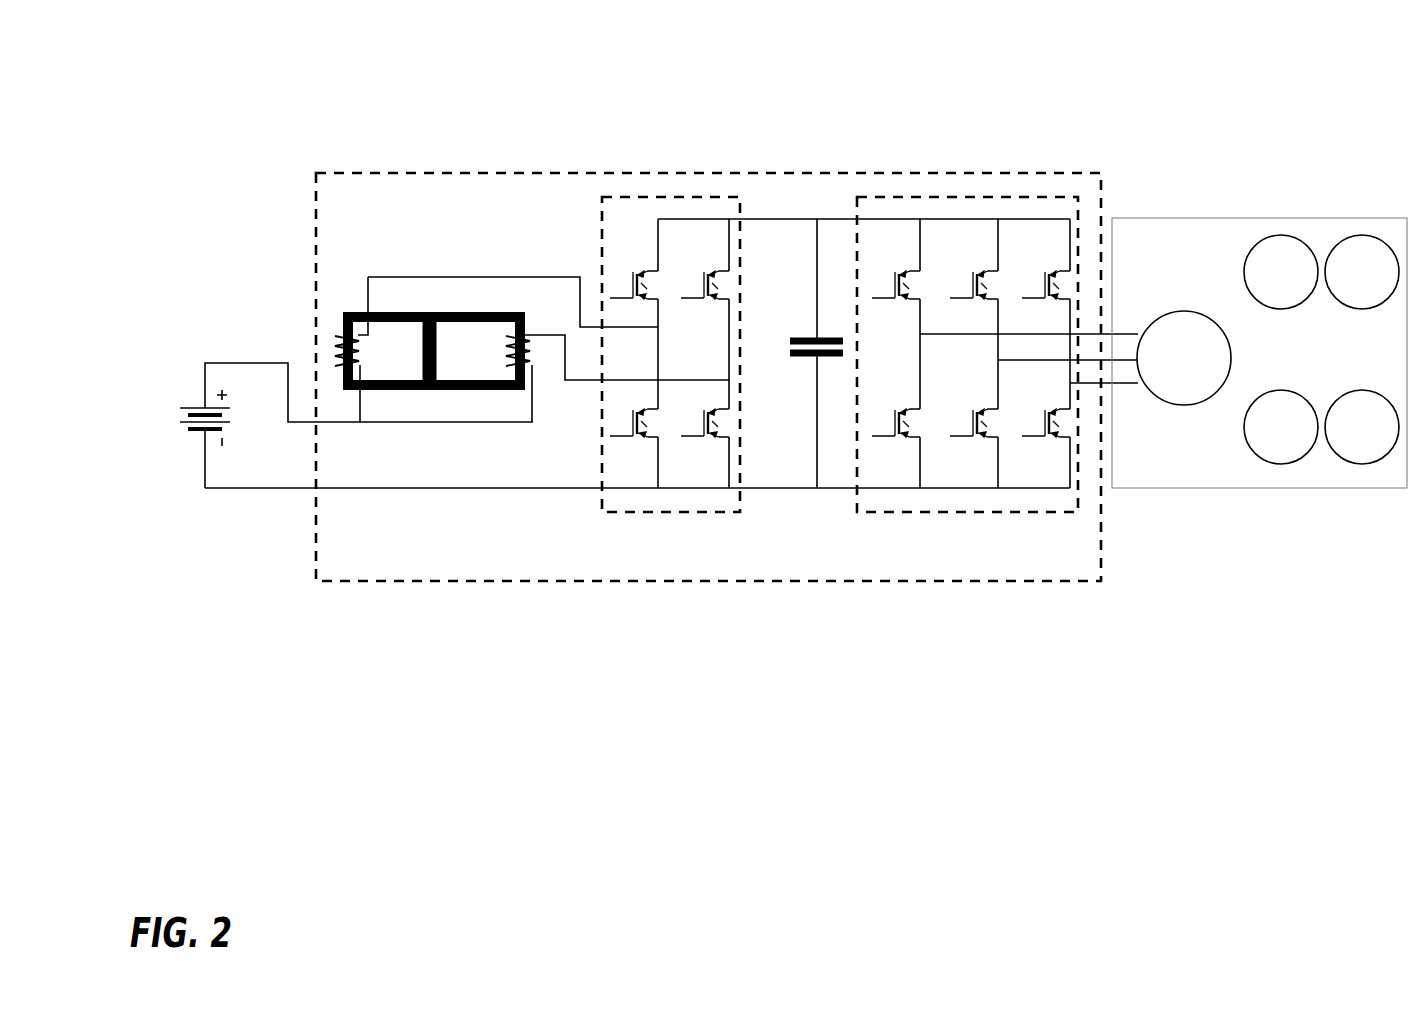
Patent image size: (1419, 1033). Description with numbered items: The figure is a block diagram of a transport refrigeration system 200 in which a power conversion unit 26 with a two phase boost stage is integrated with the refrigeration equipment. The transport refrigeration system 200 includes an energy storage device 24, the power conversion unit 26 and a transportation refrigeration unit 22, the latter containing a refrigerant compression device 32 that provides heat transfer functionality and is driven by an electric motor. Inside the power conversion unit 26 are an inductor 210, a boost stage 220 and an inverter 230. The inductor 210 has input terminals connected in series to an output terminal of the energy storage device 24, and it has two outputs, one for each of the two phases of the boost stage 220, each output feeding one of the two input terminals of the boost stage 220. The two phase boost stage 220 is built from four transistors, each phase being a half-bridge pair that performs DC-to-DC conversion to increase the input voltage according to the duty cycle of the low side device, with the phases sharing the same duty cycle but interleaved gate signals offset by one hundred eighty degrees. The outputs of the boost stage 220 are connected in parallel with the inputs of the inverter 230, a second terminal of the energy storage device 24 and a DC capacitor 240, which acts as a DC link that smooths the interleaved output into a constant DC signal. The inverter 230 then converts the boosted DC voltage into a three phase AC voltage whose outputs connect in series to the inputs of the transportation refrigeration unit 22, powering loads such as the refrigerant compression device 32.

The transport refrigeration system 200 is at (256, 114).
The energy storage device 24 is at (193, 433).
The power conversion unit 26 is at (733, 581).
The inductor 210 is at (453, 390).
The boost stage 220 is at (659, 512).
The DC capacitor 240 is at (808, 338).
The inverter 230 is at (965, 510).
The transportation refrigeration unit 22 is at (1272, 488).
The refrigerant compression device 32 is at (1180, 405).